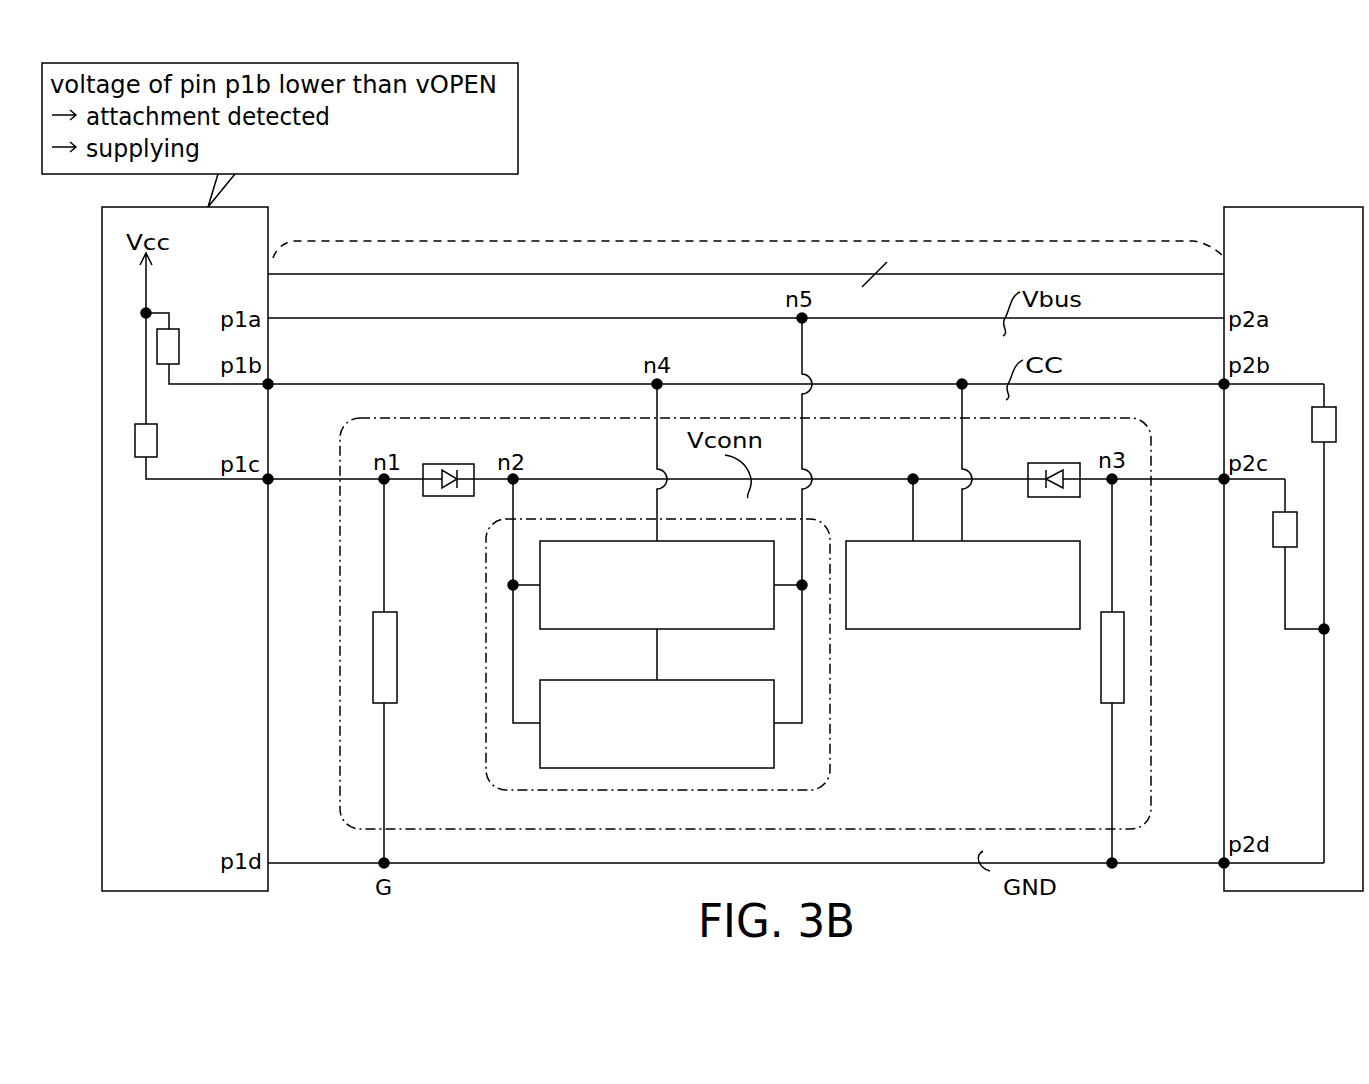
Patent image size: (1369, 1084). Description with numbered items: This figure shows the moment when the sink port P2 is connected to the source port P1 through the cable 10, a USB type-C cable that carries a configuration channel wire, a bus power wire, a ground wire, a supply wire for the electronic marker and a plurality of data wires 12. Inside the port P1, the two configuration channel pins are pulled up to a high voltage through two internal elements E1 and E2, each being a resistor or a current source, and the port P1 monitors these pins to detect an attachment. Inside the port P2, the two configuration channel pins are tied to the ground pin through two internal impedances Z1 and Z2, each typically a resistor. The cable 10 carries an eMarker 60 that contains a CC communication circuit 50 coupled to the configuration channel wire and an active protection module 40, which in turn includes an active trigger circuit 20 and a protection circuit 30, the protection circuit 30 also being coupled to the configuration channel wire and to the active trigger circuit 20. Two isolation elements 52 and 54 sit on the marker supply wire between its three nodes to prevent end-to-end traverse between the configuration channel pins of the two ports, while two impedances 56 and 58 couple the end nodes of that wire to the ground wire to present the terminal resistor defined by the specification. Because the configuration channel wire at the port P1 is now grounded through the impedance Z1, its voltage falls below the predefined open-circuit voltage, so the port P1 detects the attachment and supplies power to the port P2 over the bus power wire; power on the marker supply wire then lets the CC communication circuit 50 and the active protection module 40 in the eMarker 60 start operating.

The cable 10 is at (785, 241).
The data wires 12 is at (927, 262).
The active trigger circuit 20 is at (632, 680).
The protection circuit 30 is at (710, 630).
The active protection module 40 is at (830, 670).
The CC communication circuit 50 is at (953, 630).
The isolation element 52 is at (465, 463).
The isolation element 54 is at (1056, 463).
The impedance 56 is at (397, 665).
The impedance 58 is at (1101, 672).
The eMarker 60 is at (1150, 460).
The port P1 is at (268, 210).
The port P2 is at (1225, 216).
The internal element E1 is at (179, 334).
The internal element E2 is at (183, 428).
The internal impedance Z1 is at (1312, 419).
The internal impedance Z2 is at (1275, 542).